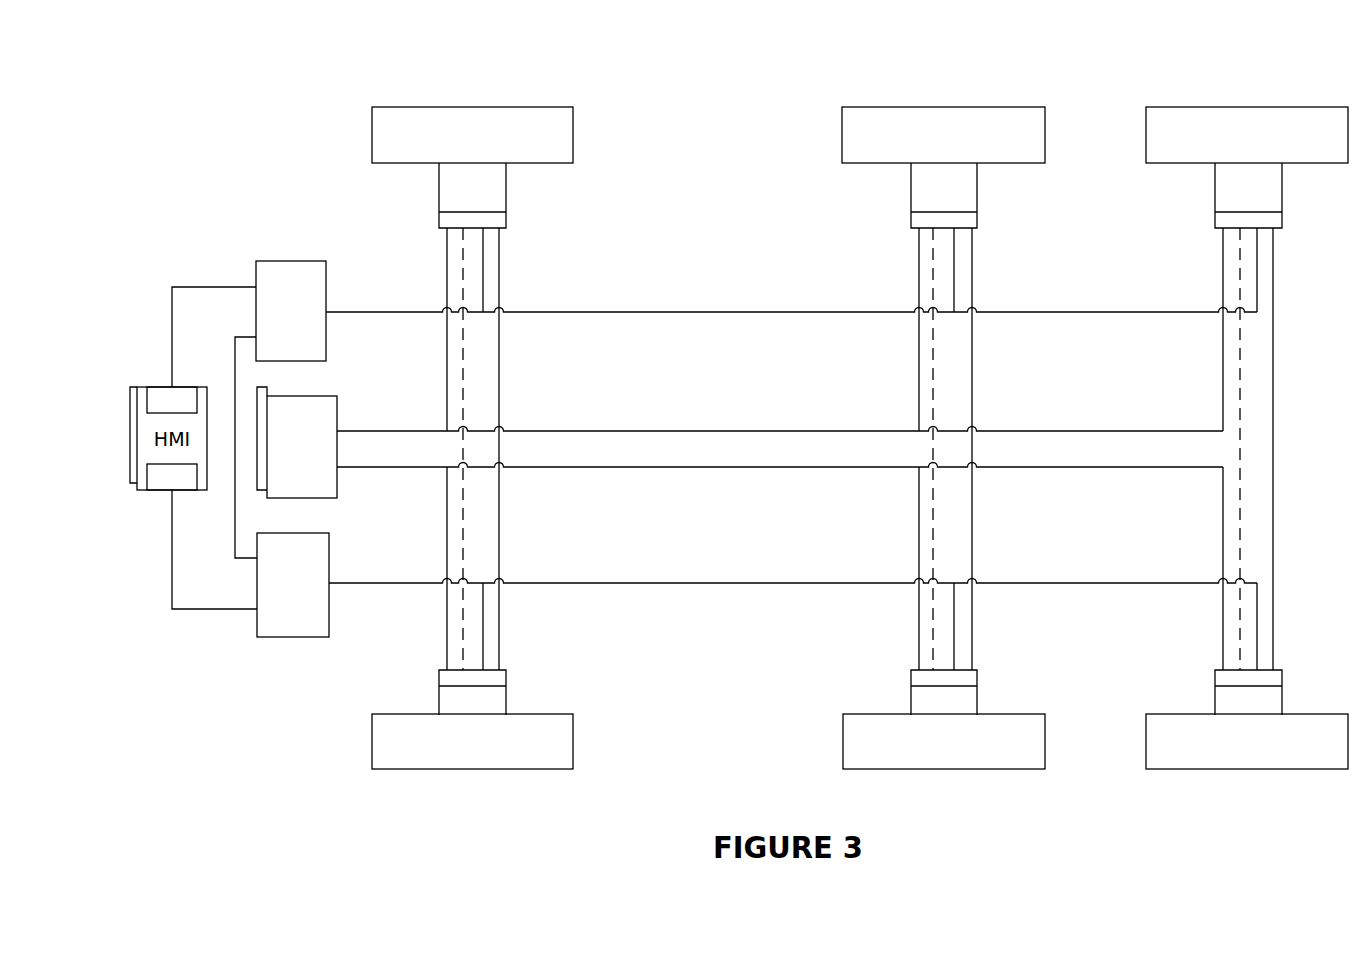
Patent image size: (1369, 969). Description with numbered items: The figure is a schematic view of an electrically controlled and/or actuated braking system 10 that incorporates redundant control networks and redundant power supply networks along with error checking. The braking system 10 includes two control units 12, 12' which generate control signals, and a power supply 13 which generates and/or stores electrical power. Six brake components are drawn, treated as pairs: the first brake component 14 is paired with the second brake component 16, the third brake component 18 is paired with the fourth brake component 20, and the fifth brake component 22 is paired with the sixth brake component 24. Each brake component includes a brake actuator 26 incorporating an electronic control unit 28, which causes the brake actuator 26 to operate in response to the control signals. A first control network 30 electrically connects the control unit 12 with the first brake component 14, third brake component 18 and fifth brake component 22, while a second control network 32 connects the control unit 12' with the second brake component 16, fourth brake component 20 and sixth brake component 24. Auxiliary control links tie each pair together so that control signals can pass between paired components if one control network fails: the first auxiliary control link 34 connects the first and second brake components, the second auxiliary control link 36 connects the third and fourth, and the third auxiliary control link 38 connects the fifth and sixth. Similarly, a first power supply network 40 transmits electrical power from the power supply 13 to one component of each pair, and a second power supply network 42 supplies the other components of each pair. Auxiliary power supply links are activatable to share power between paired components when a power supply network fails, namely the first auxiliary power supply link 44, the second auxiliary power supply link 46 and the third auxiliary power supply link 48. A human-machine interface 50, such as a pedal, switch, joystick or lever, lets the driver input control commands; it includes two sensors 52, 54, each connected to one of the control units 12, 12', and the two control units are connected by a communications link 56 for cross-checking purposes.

The braking system 10 is at (742, 136).
The control unit 12 is at (323, 300).
The control unit 12' is at (328, 572).
The power supply 13 is at (323, 413).
The first brake component 14 is at (515, 117).
The second brake component 16 is at (532, 752).
The third brake component 18 is at (868, 117).
The fourth brake component 20 is at (895, 757).
The fifth brake component 22 is at (1179, 115).
The sixth brake component 24 is at (1175, 757).
The brake actuator 26 is at (450, 195).
The electronic control unit 28 is at (928, 220).
The first control network 30 is at (791, 299).
The second control network 32 is at (793, 598).
The first auxiliary control link 34 is at (500, 378).
The second auxiliary control link 36 is at (972, 380).
The third auxiliary control link 38 is at (1273, 400).
The first power supply network 40 is at (780, 417).
The second power supply network 42 is at (780, 481).
The first auxiliary power supply link 44 is at (463, 553).
The second auxiliary power supply link 46 is at (933, 553).
The third auxiliary power supply link 48 is at (1240, 527).
The human-machine interface 50 is at (192, 390).
The sensor 52 is at (163, 395).
The sensor 54 is at (163, 482).
The communications link 56 is at (233, 523).